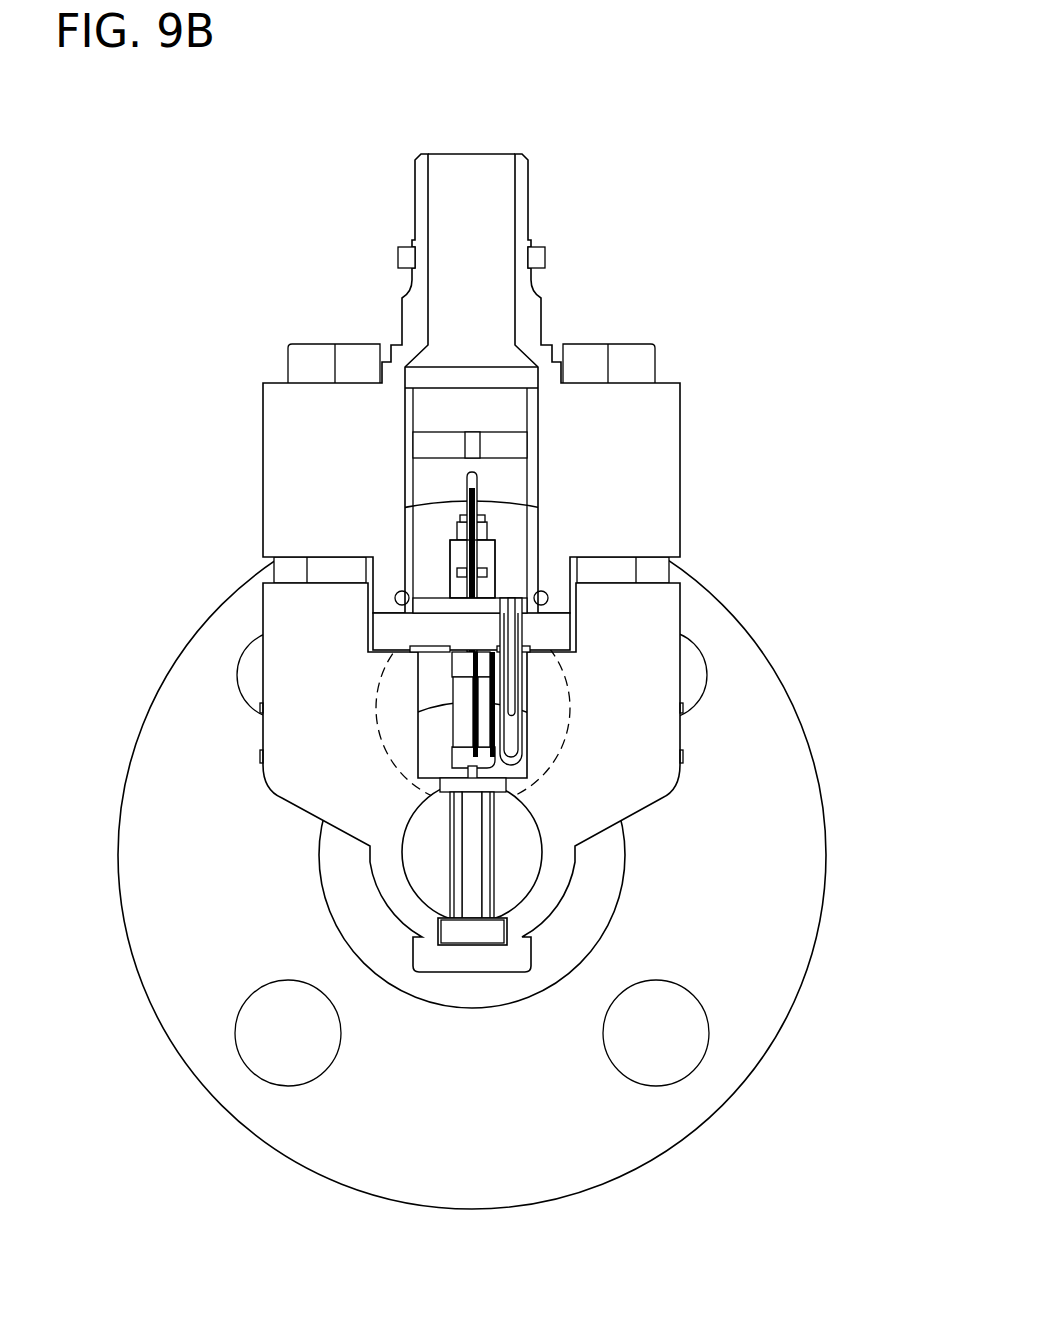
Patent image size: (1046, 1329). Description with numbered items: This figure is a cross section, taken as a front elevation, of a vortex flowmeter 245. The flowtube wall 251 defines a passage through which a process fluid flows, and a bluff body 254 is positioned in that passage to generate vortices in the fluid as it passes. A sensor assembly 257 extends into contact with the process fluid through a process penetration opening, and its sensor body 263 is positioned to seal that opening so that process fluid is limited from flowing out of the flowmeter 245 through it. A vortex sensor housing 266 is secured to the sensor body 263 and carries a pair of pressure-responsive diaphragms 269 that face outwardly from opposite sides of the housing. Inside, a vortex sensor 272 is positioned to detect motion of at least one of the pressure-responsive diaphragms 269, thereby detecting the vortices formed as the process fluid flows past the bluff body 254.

The vortex flowmeter 245 is at (818, 162).
The sensor assembly 257 is at (588, 617).
The sensor body 263 is at (572, 645).
The pressure-responsive diaphragms 269 is at (457, 691).
The vortex sensor 272 is at (452, 713).
The vortex sensor housing 266 is at (456, 768).
The flowtube wall 251 is at (535, 886).
The bluff body 254 is at (488, 888).